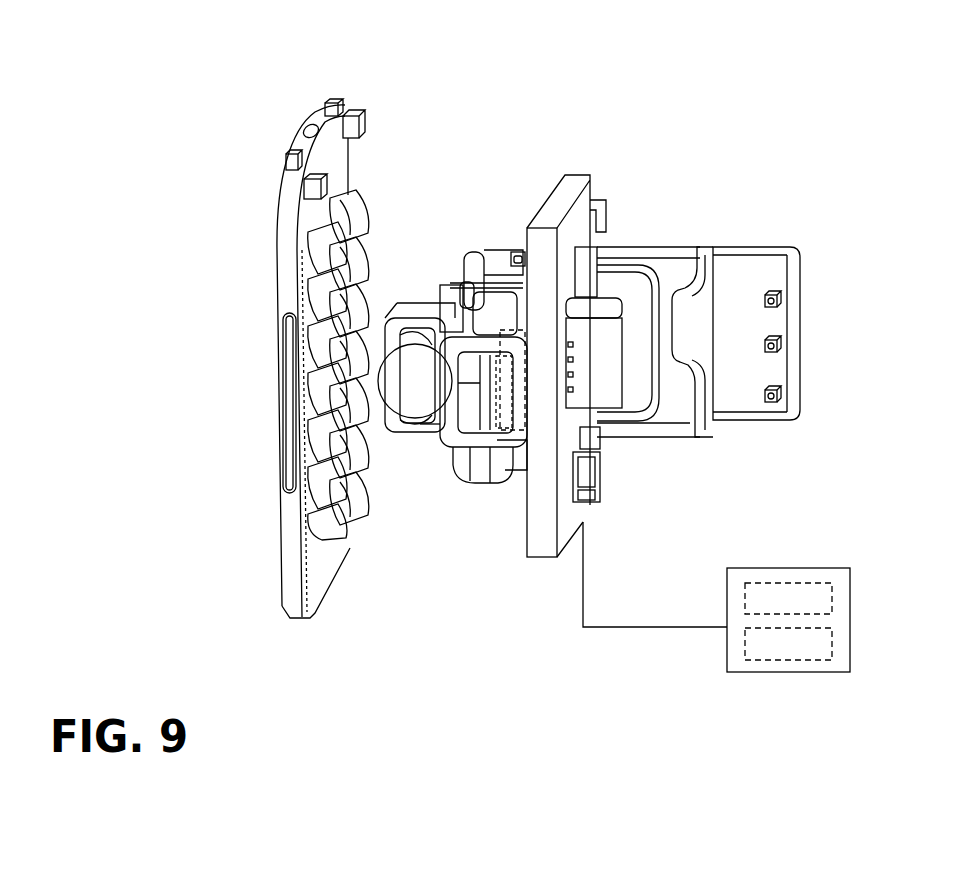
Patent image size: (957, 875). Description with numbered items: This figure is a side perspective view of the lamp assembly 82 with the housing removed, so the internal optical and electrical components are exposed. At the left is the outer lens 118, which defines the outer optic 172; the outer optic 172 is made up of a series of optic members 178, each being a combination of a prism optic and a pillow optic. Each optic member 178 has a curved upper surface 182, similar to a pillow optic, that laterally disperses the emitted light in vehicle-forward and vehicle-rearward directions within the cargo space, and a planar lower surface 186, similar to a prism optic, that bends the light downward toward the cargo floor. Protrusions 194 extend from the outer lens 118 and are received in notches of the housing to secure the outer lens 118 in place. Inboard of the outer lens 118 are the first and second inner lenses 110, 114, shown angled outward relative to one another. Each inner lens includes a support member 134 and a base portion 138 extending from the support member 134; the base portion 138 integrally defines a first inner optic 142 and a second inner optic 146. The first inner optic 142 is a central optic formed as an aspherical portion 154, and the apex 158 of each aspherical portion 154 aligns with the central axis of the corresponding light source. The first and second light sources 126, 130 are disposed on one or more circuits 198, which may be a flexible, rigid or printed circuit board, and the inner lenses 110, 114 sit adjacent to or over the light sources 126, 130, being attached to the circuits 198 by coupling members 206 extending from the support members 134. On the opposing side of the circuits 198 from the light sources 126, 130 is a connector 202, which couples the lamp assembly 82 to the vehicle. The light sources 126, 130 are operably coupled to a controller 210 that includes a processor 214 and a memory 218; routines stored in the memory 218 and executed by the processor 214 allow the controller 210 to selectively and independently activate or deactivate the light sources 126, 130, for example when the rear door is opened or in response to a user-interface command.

The lamp assembly 82 is at (684, 181).
The first inner lens 110 is at (472, 252).
The second inner lens 114 is at (468, 413).
The outer lens 118 is at (322, 117).
The first light source 126 is at (497, 340).
The second light source 130 is at (520, 335).
The support member 134 is at (500, 472).
The base portion 138 is at (467, 397).
The first inner optic 142 is at (430, 421).
The second inner optic 146 is at (413, 372).
The aspherical portion 154 is at (415, 418).
The apex 158 is at (416, 402).
The outer optic 172 is at (366, 200).
The optic member 178 is at (320, 238).
The upper surface 182 is at (325, 283).
The planar lower surface 186 is at (330, 320).
The protrusions 194 is at (363, 120).
The circuits 198 is at (566, 175).
The connector 202 is at (702, 260).
The coupling members 206 is at (497, 442).
The controller 210 is at (826, 568).
The processor 214 is at (800, 583).
The memory 218 is at (800, 660).